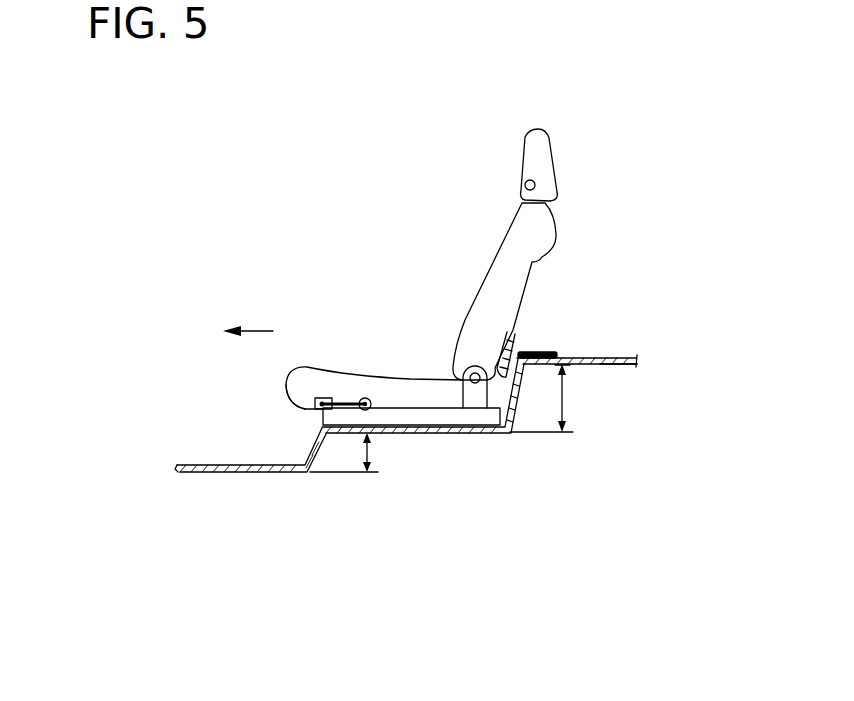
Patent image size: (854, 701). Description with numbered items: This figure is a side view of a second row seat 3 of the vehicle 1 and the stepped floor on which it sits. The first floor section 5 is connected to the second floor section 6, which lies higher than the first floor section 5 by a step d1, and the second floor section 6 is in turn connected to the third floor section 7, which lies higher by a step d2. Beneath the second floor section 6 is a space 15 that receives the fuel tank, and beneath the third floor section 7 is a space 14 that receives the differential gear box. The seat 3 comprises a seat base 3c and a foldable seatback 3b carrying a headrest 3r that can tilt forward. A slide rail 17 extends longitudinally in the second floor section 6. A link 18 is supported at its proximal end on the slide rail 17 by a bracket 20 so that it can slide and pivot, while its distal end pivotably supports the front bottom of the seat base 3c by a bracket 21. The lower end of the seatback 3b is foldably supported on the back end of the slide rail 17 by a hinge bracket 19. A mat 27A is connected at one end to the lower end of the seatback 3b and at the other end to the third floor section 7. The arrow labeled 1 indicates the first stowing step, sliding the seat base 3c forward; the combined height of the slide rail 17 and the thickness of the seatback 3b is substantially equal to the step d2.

The second row seat 3 is at (419, 266).
The headrest 3r is at (574, 165).
The seatback 3b is at (490, 261).
The seat base 3c is at (374, 338).
The hinge bracket 19 is at (525, 334).
The slide rail 17 is at (411, 469).
The link 18 is at (332, 318).
The bracket 20 is at (365, 351).
The bracket 21 is at (258, 399).
The mat 27A is at (573, 327).
The vehicle 1 is at (248, 296).
The first floor section 5 is at (226, 415).
The second floor section 6 is at (424, 443).
The space 15 is at (547, 444).
The third floor section 7 is at (619, 313).
The space 14 is at (664, 409).
The step d1 is at (359, 454).
The step d2 is at (554, 398).